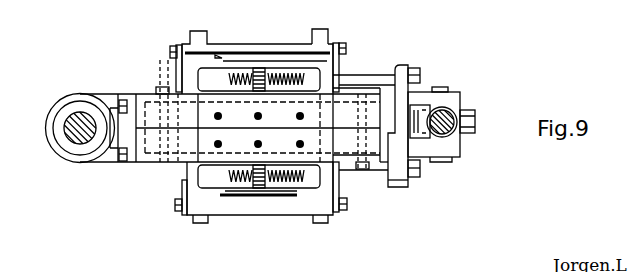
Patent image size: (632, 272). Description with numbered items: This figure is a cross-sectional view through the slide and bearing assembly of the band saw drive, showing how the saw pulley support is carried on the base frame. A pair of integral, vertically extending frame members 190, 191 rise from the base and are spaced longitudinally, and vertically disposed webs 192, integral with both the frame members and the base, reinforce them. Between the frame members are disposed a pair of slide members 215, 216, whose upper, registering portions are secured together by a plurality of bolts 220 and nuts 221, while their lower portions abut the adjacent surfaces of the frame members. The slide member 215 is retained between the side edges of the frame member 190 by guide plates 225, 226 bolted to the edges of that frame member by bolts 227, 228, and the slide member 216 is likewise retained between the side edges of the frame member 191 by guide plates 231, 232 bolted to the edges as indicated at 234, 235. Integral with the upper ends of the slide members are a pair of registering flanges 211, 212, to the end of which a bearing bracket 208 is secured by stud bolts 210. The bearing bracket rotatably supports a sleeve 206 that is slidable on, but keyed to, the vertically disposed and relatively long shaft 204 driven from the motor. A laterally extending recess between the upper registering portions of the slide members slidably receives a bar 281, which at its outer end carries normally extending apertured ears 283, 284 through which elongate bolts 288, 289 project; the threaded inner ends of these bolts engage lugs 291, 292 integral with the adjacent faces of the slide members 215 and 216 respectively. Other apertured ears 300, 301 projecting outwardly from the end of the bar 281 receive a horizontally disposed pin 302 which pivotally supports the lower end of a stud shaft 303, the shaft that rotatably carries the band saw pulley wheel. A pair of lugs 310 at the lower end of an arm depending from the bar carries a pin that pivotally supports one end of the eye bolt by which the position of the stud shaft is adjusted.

The frame member 190 is at (326, 38).
The frame member 191 is at (322, 223).
The web 192 is at (205, 33).
The shaft 204 is at (74, 118).
The sleeve 206 is at (75, 140).
The bearing bracket 208 is at (58, 140).
The stud bolt 210 is at (124, 100).
The flange 211 is at (135, 93).
The flange 212 is at (143, 166).
The slide member 215 is at (222, 56).
The slide member 216 is at (212, 205).
The bolt 220 is at (178, 72).
The nut 221 is at (168, 82).
The guide plate 225 is at (340, 63).
The guide plate 226 is at (173, 48).
The bolt 227 is at (346, 47).
The bolt 228 is at (183, 44).
The guide plate 231 is at (342, 197).
The guide plate 232 is at (178, 196).
The bolt 234 is at (344, 212).
The bolt 235 is at (179, 211).
The bar 281 is at (380, 170).
The apertured ear 283 is at (403, 66).
The apertured ear 284 is at (407, 180).
The bolt 288 is at (421, 170).
The bolt 289 is at (420, 74).
The lug 291 is at (259, 72).
The lug 292 is at (262, 190).
The apertured ear 300 is at (460, 98).
The apertured ear 301 is at (456, 148).
The pin 302 is at (445, 88).
The stud shaft 303 is at (474, 115).
The lug 310 is at (417, 140).